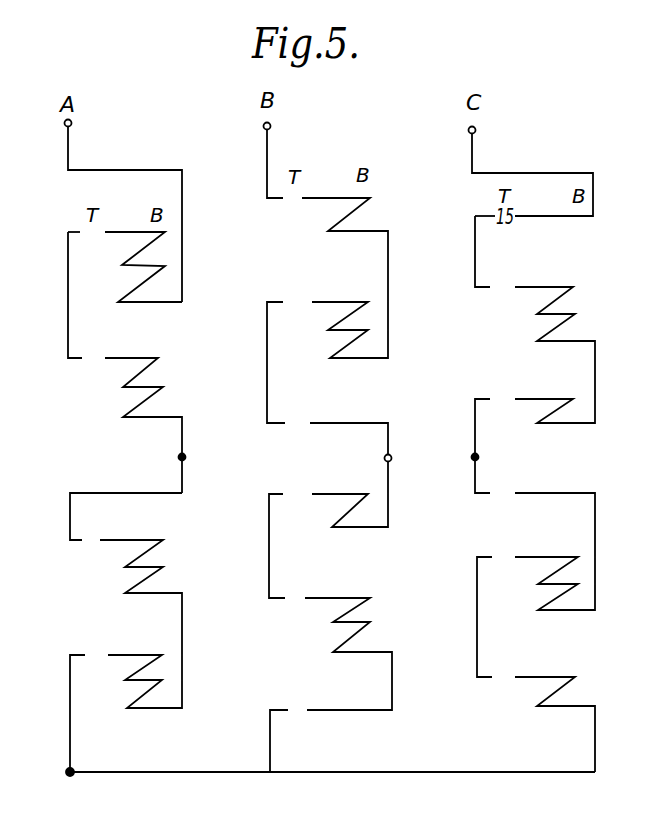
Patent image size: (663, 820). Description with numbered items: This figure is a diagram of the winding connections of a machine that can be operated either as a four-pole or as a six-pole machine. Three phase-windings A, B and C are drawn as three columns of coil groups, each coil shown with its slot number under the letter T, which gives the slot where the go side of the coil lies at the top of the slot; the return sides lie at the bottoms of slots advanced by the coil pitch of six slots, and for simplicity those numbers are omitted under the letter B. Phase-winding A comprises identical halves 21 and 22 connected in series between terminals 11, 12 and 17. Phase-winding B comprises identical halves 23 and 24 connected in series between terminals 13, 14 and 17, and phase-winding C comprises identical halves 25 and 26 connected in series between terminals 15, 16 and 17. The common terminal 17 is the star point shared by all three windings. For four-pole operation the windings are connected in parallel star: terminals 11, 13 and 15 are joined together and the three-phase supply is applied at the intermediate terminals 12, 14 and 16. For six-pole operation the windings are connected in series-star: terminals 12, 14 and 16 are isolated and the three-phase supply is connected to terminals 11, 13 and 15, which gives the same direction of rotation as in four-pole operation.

The terminal 11 is at (72, 123).
The terminal 12 is at (178, 457).
The terminal 13 is at (271, 126).
The terminal 14 is at (385, 458).
The terminal 15 is at (476, 128).
The terminal 16 is at (479, 457).
The terminal 17 is at (66, 773).
The half of phase-winding A 21 is at (67, 303).
The half of phase-winding A 22 is at (180, 523).
The half of phase-winding B 23 is at (386, 268).
The half of phase-winding B 24 is at (271, 560).
The half of phase-winding C 25 is at (477, 256).
The half of phase-winding C 26 is at (592, 528).